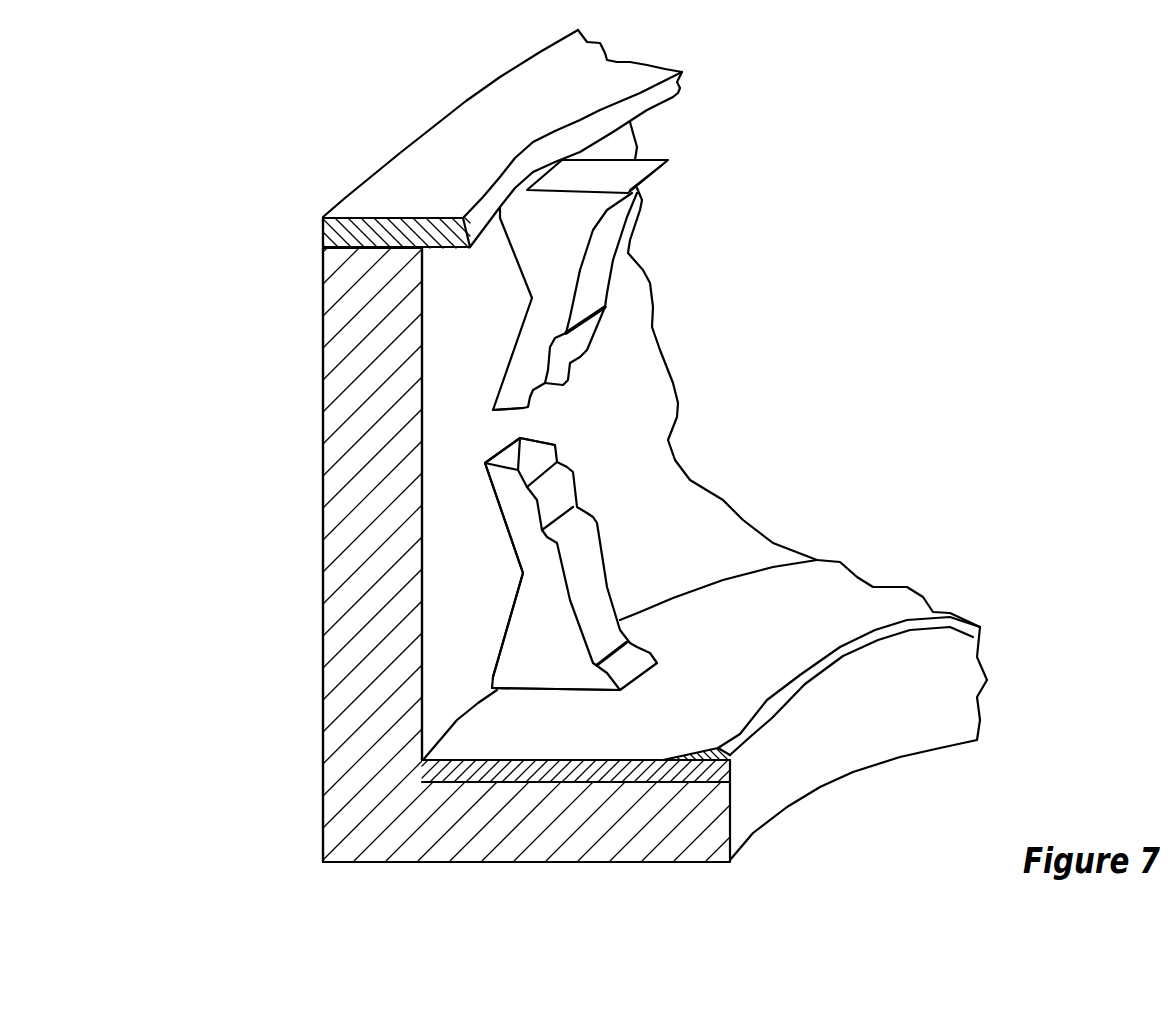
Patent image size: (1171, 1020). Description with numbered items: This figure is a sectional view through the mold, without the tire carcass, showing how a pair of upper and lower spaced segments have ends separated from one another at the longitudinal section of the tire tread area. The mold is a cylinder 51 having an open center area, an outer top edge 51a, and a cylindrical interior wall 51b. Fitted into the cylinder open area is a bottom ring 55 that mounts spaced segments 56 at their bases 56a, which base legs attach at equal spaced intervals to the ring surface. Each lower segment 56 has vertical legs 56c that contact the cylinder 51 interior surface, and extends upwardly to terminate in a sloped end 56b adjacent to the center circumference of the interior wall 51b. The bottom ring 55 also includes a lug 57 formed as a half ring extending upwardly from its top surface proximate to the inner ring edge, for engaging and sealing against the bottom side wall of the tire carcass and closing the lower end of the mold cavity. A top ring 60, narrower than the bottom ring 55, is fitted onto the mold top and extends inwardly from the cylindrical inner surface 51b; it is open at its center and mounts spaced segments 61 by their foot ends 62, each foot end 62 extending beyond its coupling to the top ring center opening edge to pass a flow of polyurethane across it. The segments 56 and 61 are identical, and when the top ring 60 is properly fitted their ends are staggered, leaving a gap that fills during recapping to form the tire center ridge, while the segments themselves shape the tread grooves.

The cylinder 51 is at (466, 555).
The top edge 51a is at (250, 540).
The interior wall 51b is at (326, 504).
The bottom ring 55 is at (576, 845).
The spaced segments 56 is at (448, 566).
The bases 56a is at (473, 806).
The sloped end 56b is at (403, 482).
The vertical legs 56c is at (375, 570).
The lug ring 57 is at (705, 723).
The top ring 60 is at (344, 198).
The spaced segments 61 is at (626, 285).
The foot end 62 is at (385, 412).